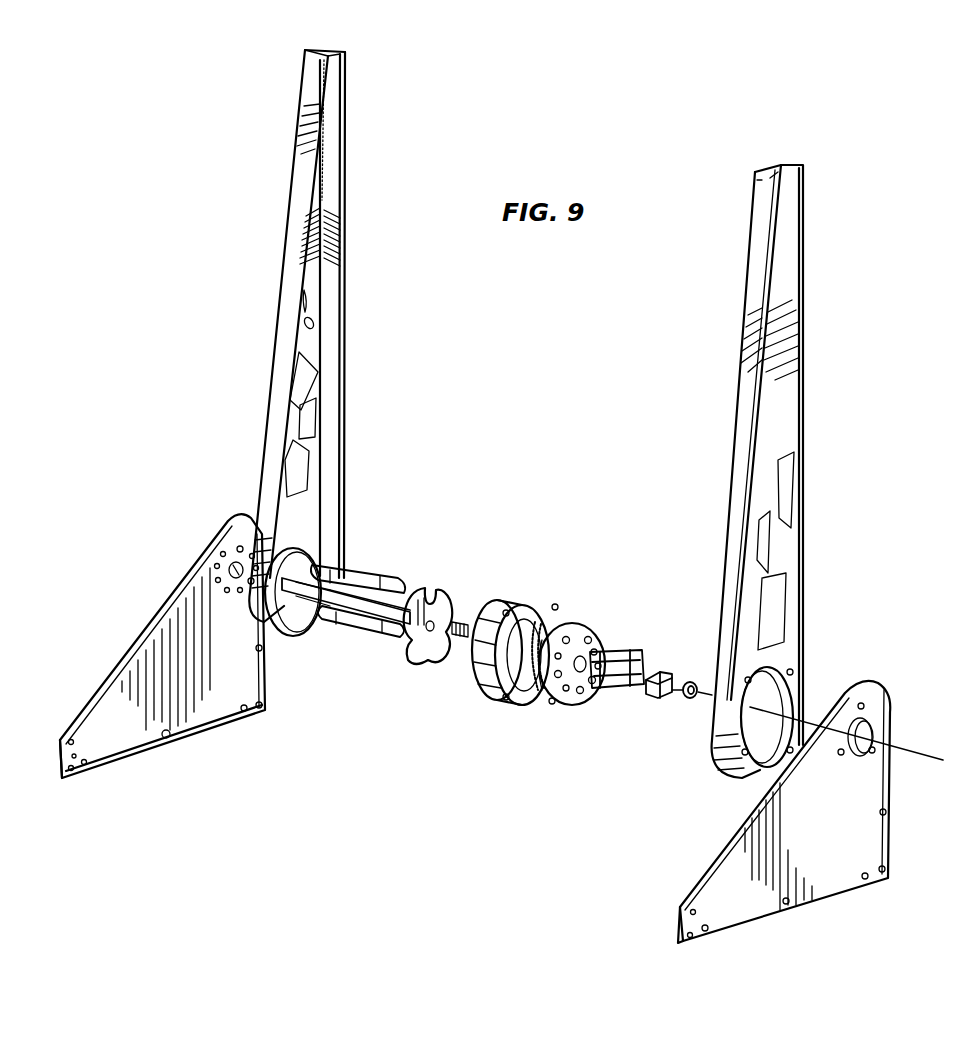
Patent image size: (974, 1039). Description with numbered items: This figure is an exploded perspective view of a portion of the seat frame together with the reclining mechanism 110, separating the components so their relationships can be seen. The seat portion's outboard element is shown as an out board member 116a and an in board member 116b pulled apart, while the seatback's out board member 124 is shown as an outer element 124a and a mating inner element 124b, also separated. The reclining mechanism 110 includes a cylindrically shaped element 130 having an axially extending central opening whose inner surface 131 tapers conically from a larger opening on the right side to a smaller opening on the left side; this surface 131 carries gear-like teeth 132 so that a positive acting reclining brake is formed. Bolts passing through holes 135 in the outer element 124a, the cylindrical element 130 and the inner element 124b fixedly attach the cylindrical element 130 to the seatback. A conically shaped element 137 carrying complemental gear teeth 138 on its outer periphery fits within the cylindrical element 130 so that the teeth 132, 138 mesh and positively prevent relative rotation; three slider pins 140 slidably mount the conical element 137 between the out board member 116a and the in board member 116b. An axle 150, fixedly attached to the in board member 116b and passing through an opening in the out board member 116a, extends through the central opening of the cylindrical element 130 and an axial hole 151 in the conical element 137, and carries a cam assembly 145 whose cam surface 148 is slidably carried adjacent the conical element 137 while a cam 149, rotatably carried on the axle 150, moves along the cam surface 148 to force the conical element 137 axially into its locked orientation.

The reclining mechanism 110 is at (584, 625).
The out board member 116a is at (873, 692).
The in board member 116b is at (220, 702).
The out board member 124 is at (804, 471).
The outer element 124a is at (792, 408).
The inner element 124b is at (330, 360).
The cylindrically shaped element 130 is at (568, 648).
The inner surface 131 is at (503, 695).
The gear teeth 132 is at (560, 604).
The holes 135 is at (313, 540).
The conically shaped element 137 is at (606, 626).
The gear teeth 138 is at (539, 695).
The slider pins 140 is at (413, 592).
The cam assembly 145 is at (623, 702).
The cam surface 148 is at (638, 655).
The cam 149 is at (660, 688).
The axle 150 is at (308, 620).
The axial hole 151 is at (622, 658).